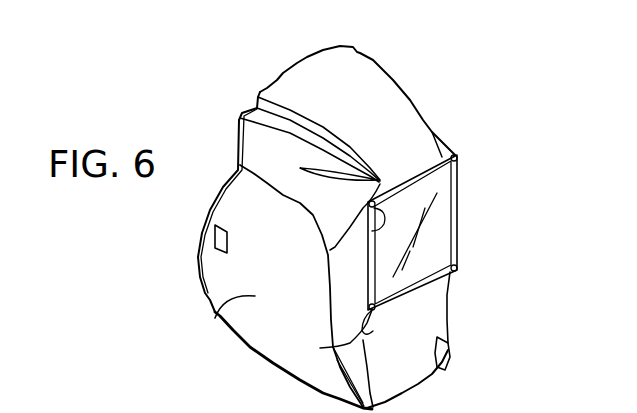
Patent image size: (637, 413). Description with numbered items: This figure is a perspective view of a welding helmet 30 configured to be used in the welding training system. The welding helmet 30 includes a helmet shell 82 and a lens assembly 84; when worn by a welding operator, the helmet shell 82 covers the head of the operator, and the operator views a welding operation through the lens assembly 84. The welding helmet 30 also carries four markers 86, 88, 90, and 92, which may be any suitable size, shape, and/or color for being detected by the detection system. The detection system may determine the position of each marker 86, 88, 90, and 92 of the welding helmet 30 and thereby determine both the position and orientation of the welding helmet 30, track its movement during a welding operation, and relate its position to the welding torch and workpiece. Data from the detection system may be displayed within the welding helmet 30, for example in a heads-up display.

The welding helmet 30 is at (525, 132).
The helmet shell 82 is at (219, 311).
The lens assembly 84 is at (435, 228).
The marker 86 is at (338, 246).
The marker 88 is at (457, 167).
The marker 90 is at (335, 348).
The marker 92 is at (457, 270).